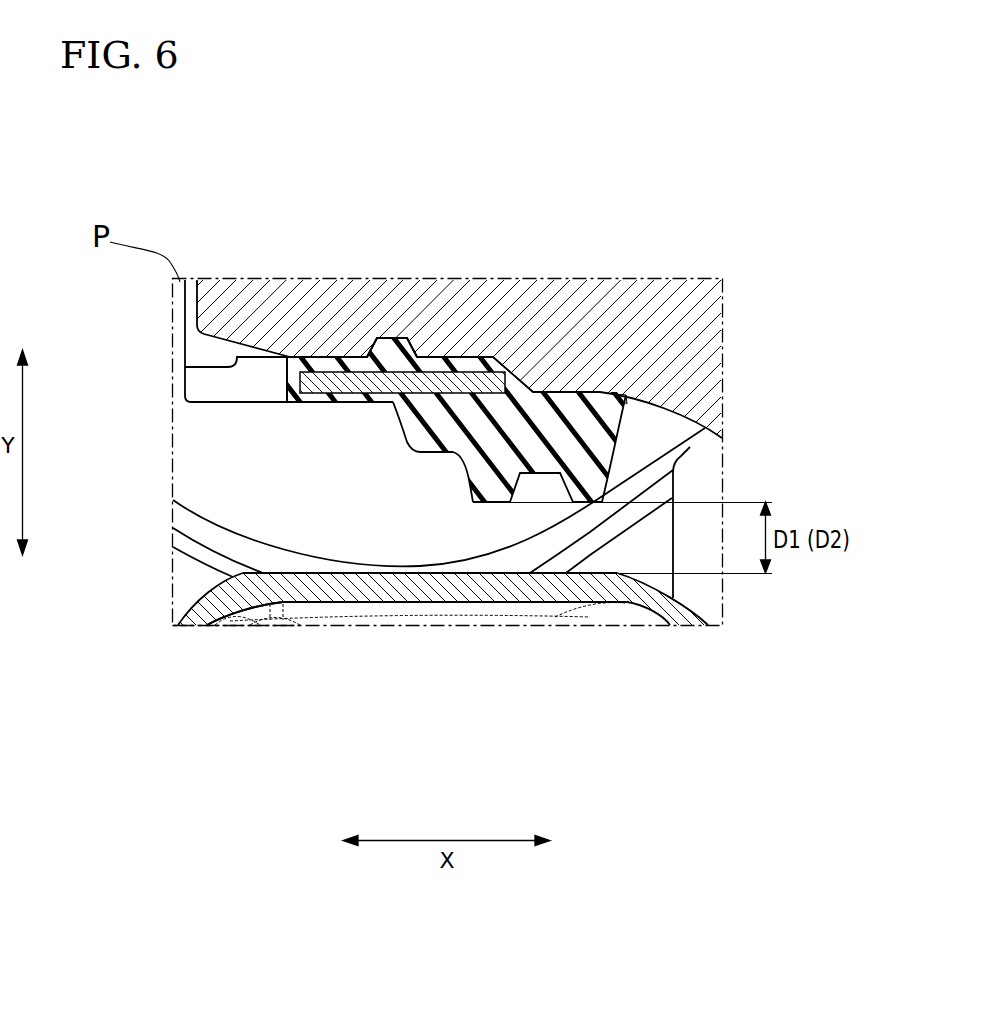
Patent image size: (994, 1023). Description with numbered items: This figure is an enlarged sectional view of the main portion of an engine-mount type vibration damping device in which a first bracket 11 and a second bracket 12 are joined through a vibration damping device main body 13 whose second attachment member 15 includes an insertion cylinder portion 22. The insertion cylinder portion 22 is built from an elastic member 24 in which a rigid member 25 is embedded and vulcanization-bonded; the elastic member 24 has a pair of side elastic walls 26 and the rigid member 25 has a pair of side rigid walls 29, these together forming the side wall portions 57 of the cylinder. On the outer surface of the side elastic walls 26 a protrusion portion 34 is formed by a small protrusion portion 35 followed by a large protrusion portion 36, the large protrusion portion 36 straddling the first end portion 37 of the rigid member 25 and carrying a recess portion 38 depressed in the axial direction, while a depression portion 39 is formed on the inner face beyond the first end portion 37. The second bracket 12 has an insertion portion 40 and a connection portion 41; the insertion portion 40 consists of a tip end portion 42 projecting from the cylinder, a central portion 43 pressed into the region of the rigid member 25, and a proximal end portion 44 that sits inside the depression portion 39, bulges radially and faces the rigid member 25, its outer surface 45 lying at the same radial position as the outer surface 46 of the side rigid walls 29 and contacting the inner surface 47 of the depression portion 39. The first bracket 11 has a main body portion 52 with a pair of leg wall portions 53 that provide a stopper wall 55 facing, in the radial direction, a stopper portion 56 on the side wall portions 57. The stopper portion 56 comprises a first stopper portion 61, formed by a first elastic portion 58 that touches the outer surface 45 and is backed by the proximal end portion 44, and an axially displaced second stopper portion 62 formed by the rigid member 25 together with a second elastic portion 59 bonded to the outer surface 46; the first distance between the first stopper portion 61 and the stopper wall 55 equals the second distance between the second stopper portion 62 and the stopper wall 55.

The first bracket 11 is at (183, 592).
The second bracket 12 is at (428, 58).
The vibration damping device main body 13 is at (187, 379).
The second attachment member 15 is at (226, 404).
The insertion cylinder portion 22 is at (265, 220).
The elastic member 24 is at (336, 356).
The rigid member 25 is at (315, 371).
The side elastic walls 26 is at (377, 405).
The side rigid walls 29 is at (330, 380).
The protrusion portion 34 is at (432, 190).
The small protrusion portion 35 is at (518, 356).
The large protrusion portion 36 is at (585, 424).
The first end portion 37 is at (525, 368).
The recess portion 38 is at (542, 474).
The depression portion 39 is at (553, 389).
The insertion portion 40 is at (258, 100).
The connection portion 41 is at (677, 294).
The tip end portion 42 is at (230, 295).
The central portion 43 is at (413, 285).
The proximal end portion 44 is at (622, 295).
The outer surface 45 is at (605, 398).
The outer surface 46 is at (415, 400).
The inner surface 47 is at (594, 372).
The main body portion 52 is at (173, 627).
The leg wall portions 53 is at (192, 613).
The stopper wall 55 is at (474, 462).
The stopper portion 56 is at (385, 256).
The side wall portions 57 is at (265, 676).
The first elastic portion 58 is at (604, 447).
The second elastic portion 59 is at (455, 447).
The first stopper portion 61 is at (395, 337).
The second stopper portion 62 is at (358, 353).